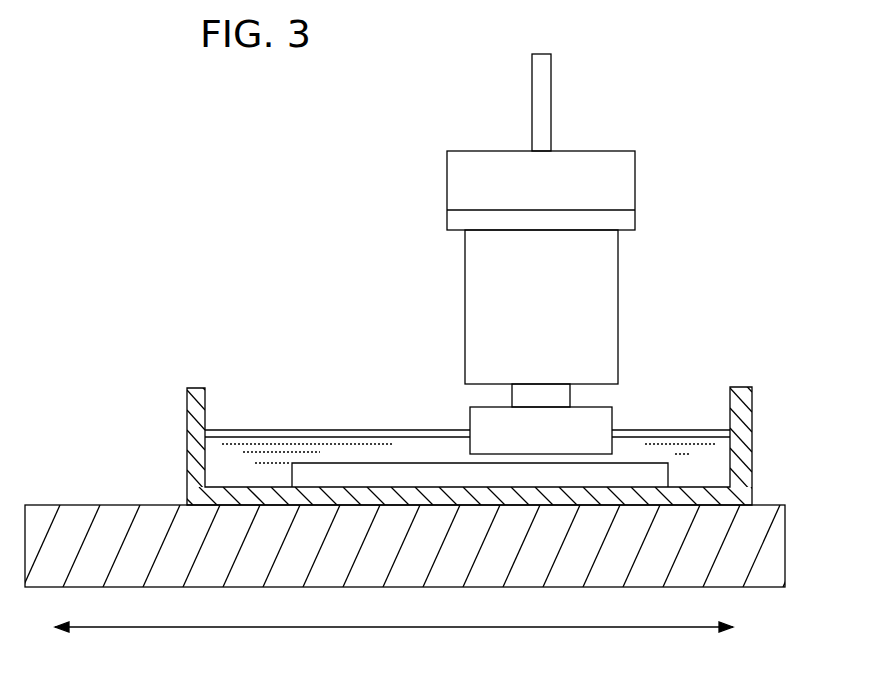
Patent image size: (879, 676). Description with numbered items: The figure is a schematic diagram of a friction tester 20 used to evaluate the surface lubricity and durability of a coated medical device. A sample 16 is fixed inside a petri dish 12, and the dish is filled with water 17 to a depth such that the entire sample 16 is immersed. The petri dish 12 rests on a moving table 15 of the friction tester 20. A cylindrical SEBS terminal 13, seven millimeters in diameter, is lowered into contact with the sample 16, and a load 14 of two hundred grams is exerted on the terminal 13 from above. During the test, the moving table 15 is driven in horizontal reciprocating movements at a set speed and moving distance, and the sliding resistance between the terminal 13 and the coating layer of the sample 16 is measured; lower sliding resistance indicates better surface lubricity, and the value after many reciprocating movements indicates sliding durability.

The friction tester 20 is at (137, 143).
The petri dish 12 is at (755, 412).
The cylindrical SEBS terminal 13 is at (604, 456).
The load 14 is at (627, 182).
The moving table 15 is at (78, 505).
The sample 16 is at (330, 472).
The water 17 is at (428, 447).